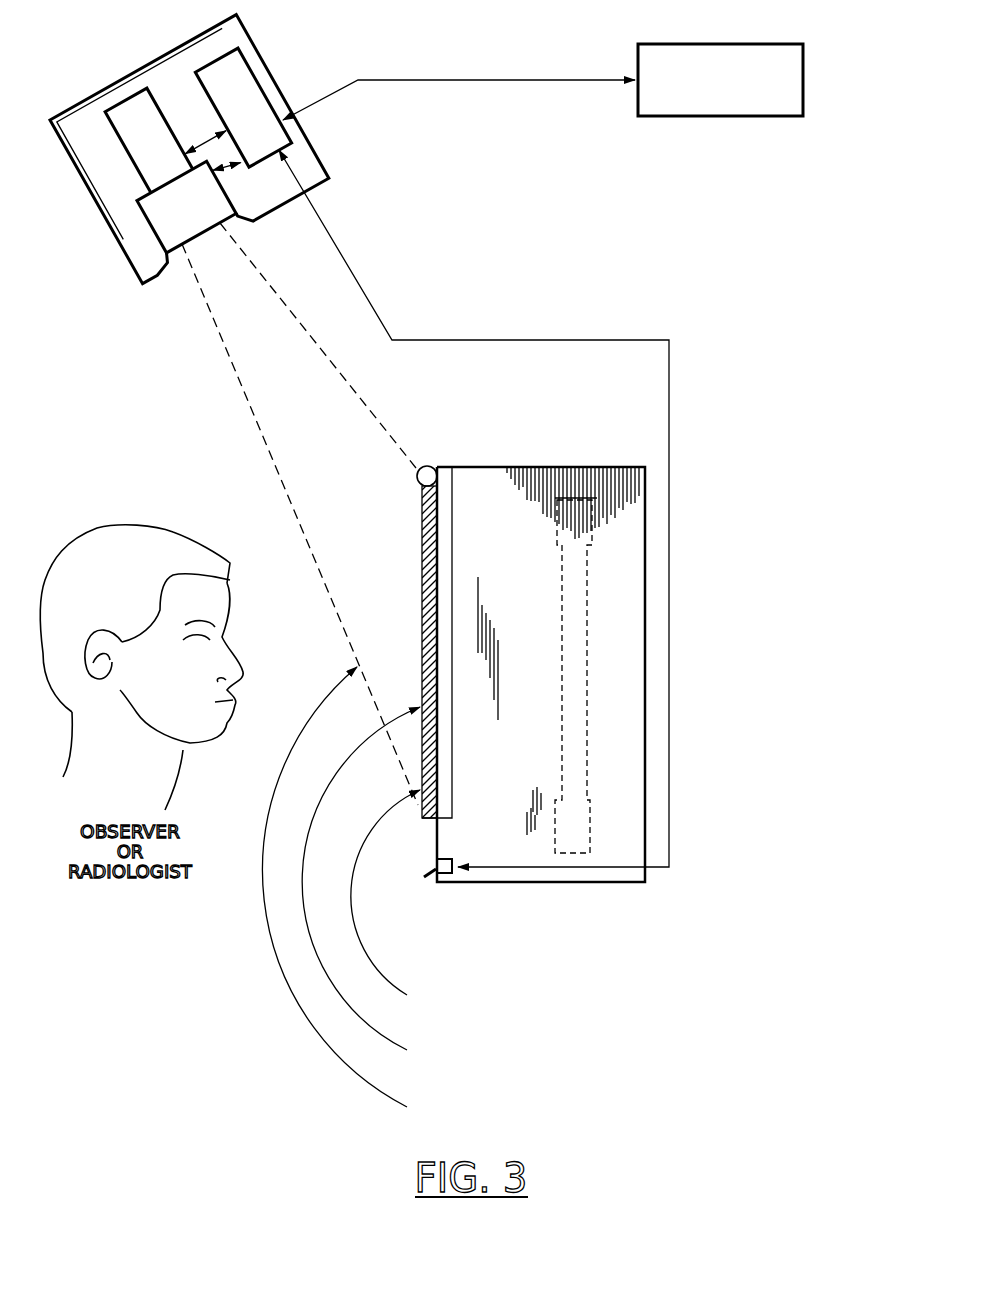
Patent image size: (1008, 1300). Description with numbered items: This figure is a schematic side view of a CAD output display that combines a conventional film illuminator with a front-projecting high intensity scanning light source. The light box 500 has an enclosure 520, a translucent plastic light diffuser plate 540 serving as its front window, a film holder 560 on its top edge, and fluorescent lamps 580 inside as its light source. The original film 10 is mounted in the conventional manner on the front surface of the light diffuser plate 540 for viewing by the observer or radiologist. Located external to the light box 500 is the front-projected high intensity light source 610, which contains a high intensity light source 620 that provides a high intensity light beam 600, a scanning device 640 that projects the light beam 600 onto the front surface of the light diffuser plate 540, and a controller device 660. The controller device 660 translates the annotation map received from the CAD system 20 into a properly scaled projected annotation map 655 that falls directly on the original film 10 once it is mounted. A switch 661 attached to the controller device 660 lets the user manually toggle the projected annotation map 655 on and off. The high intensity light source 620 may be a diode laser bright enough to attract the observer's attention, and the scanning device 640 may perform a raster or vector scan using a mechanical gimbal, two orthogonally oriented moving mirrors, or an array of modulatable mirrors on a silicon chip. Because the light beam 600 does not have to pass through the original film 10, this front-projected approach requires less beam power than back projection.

The front-projected high intensity light source 610 is at (237, 15).
The high intensity light source 620 is at (169, 129).
The controller device 660 is at (243, 107).
The scanning device 640 is at (199, 200).
The CAD system 20 is at (802, 48).
The film holder 560 is at (415, 463).
The light box 500 is at (656, 680).
The enclosure 520 is at (645, 725).
The fluorescent lamps 580 is at (587, 743).
The light diffuser plate 540 is at (455, 775).
The switch 661 is at (447, 882).
The original film 10 is at (415, 900).
The projected annotation map 655 is at (503, 889).
The high intensity light beam 600 is at (500, 896).